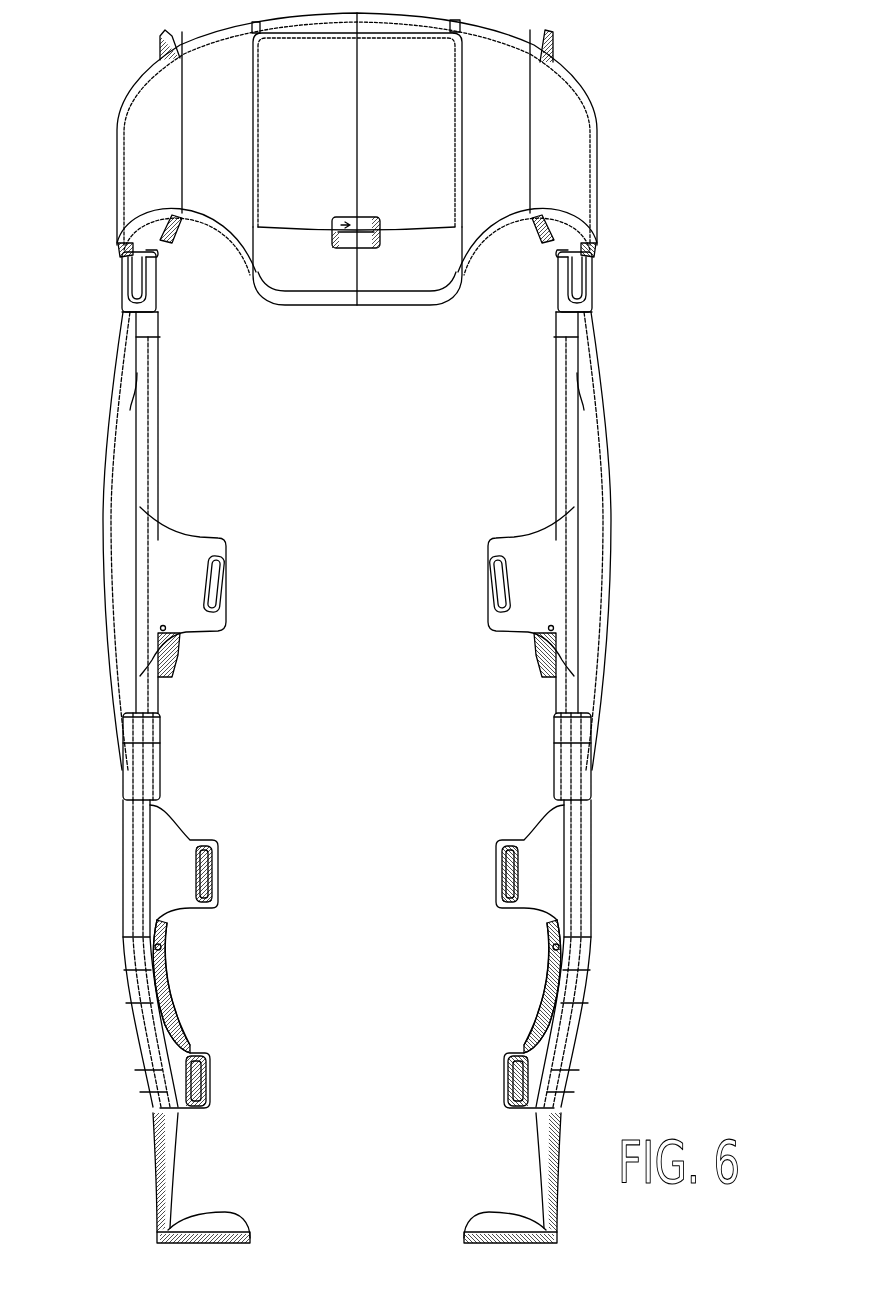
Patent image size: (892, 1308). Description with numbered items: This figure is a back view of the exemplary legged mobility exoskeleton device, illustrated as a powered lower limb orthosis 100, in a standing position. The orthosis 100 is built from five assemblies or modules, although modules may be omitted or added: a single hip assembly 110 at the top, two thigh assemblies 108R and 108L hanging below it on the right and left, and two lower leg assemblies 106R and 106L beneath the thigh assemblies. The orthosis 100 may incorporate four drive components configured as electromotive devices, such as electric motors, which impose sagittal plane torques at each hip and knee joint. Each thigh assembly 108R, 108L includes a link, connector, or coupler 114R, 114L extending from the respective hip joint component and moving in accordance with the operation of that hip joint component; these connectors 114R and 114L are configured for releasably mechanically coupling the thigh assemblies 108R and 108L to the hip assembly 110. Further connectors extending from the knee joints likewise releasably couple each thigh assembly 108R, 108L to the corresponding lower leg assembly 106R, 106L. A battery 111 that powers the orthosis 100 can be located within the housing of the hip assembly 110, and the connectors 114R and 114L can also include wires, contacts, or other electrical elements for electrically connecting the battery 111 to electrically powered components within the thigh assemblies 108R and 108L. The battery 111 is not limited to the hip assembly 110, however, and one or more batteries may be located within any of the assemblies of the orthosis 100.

The powered lower limb orthosis 100 is at (648, 85).
The hip assembly 110 is at (612, 167).
The battery 111 is at (433, 198).
The connector 114L is at (120, 254).
The connector 114R is at (598, 250).
The thigh assembly 108L is at (254, 570).
The thigh assembly 108R is at (634, 503).
The lower leg assembly 106L is at (228, 946).
The lower leg assembly 106R is at (610, 938).